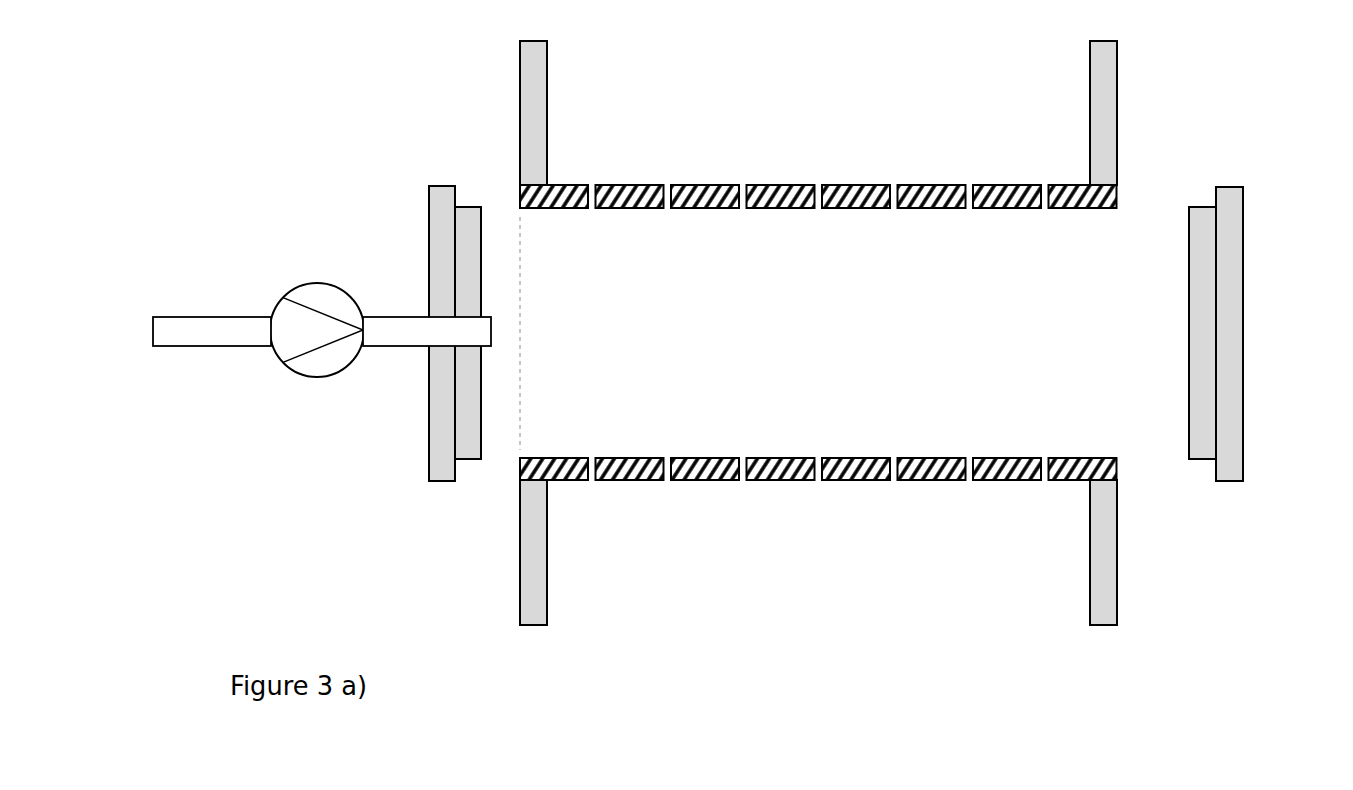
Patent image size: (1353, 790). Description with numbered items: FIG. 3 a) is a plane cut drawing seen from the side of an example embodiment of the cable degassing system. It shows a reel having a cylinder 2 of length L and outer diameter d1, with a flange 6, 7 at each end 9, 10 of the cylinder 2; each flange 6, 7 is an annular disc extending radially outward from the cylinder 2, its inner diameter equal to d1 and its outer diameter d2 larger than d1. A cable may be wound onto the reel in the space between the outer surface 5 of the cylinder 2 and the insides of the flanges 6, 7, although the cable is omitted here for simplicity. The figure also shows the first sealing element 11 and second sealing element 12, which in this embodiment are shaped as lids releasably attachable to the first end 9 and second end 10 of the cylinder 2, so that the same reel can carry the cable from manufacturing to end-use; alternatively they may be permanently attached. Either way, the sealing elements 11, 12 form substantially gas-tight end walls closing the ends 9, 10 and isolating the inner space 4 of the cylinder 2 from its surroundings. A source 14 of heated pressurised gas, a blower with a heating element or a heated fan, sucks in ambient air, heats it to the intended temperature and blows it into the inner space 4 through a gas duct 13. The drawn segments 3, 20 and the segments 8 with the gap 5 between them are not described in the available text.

The cylinder 2 is at (1115, 193).
The electrode segment 3 is at (777, 457).
The inner space 4 is at (803, 343).
The outer surface 5 is at (920, 482).
The flange 6 is at (547, 112).
The flange 7 is at (1108, 88).
The electrode segments 8 is at (672, 185).
The first end 9 is at (506, 241).
The second end 10 is at (1132, 258).
The first sealing element 11 is at (440, 396).
The second sealing element 12 is at (1229, 299).
The gas duct 13 is at (392, 313).
The source of heated pressurised gas 14 is at (234, 314).
The electrode segment 20 is at (887, 457).